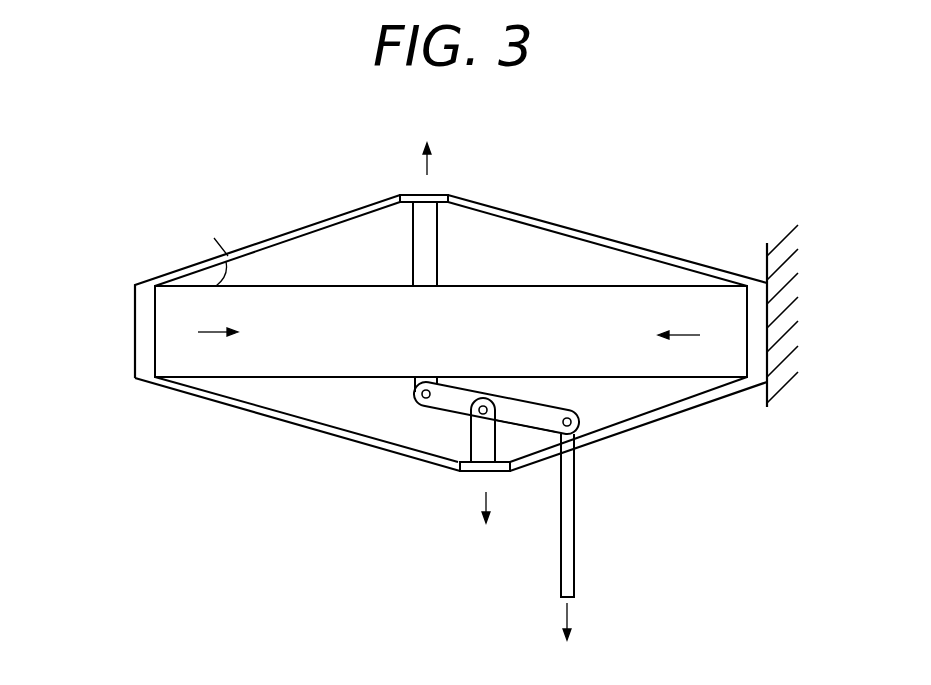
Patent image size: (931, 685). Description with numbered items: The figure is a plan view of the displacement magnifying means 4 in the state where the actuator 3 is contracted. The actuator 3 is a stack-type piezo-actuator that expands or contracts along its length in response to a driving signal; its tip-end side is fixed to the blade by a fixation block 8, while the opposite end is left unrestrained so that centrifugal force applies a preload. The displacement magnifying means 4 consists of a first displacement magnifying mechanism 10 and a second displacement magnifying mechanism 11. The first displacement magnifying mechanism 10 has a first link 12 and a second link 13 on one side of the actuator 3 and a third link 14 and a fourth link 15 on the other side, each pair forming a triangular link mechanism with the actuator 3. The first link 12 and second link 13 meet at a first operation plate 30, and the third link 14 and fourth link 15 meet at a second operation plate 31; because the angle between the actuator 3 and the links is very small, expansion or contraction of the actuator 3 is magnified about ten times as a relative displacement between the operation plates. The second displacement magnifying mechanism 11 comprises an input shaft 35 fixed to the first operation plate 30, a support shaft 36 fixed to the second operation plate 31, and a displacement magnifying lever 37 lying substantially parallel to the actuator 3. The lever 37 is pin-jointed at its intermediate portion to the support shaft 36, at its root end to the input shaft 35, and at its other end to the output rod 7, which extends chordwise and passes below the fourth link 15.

The actuator 3 is at (497, 307).
The displacement magnifying means 4 is at (448, 319).
The output rod 7 is at (572, 558).
The fixation block 8 is at (782, 252).
The first displacement magnifying mechanism 10 is at (310, 213).
The second displacement magnifying mechanism 11 is at (556, 403).
The first link 12 is at (243, 250).
The second link 13 is at (588, 243).
The third link 14 is at (348, 437).
The fourth link 15 is at (665, 418).
The first operation plate 30 is at (430, 197).
The second operation plate 31 is at (473, 472).
The input shaft 35 is at (421, 238).
The support shaft 36 is at (480, 440).
The displacement magnifying lever 37 is at (523, 415).